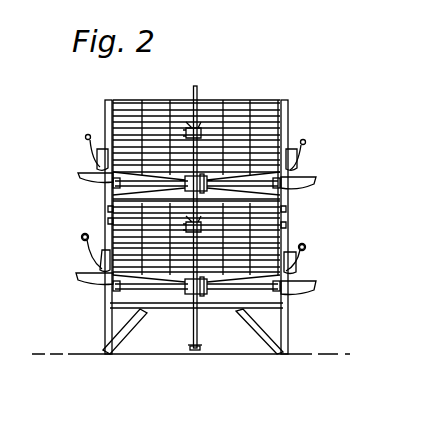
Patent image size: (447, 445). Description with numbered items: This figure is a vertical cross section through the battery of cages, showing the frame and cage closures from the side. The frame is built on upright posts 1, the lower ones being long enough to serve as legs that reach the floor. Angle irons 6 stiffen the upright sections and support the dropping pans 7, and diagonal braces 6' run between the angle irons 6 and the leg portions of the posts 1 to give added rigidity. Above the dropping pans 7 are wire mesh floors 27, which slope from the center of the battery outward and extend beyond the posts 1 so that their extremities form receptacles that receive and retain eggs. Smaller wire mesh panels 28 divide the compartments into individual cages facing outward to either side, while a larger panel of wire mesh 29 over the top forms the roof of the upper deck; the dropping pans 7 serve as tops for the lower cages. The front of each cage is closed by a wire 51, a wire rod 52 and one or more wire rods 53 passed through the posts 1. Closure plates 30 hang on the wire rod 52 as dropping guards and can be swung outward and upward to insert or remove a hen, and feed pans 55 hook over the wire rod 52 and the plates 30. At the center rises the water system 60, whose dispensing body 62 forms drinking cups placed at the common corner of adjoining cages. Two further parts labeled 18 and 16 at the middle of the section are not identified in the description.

The posts 1 is at (110, 336).
The angle irons 6 is at (196, 311).
The braces 6' is at (130, 331).
The dropping pans 7 is at (207, 311).
The shaft 16 is at (214, 190).
The shaft 18 is at (161, 188).
The wire mesh floors 27 is at (80, 175).
The smaller wire mesh panels 28 is at (201, 147).
The larger panel of wire mesh 29 is at (163, 101).
The closure plate 30 is at (97, 168).
The wire 51 is at (110, 208).
The wire rod 52 is at (81, 237).
The wire rods 53 is at (110, 220).
The feed pan 55 is at (86, 137).
The water system 60 is at (184, 351).
The body 62 is at (204, 124).